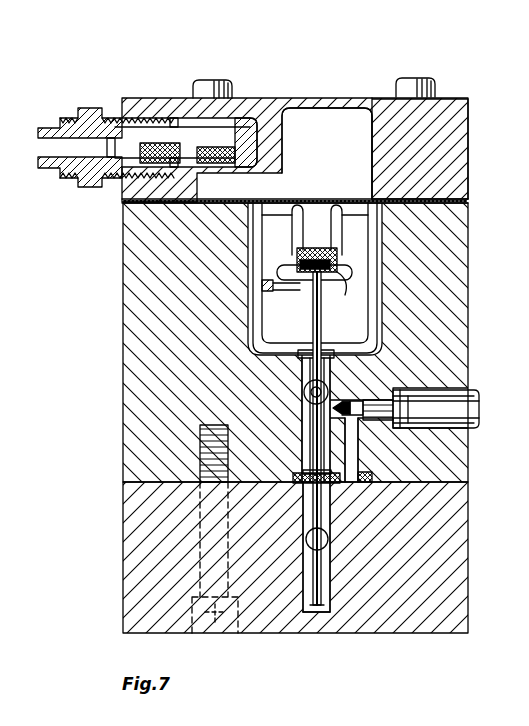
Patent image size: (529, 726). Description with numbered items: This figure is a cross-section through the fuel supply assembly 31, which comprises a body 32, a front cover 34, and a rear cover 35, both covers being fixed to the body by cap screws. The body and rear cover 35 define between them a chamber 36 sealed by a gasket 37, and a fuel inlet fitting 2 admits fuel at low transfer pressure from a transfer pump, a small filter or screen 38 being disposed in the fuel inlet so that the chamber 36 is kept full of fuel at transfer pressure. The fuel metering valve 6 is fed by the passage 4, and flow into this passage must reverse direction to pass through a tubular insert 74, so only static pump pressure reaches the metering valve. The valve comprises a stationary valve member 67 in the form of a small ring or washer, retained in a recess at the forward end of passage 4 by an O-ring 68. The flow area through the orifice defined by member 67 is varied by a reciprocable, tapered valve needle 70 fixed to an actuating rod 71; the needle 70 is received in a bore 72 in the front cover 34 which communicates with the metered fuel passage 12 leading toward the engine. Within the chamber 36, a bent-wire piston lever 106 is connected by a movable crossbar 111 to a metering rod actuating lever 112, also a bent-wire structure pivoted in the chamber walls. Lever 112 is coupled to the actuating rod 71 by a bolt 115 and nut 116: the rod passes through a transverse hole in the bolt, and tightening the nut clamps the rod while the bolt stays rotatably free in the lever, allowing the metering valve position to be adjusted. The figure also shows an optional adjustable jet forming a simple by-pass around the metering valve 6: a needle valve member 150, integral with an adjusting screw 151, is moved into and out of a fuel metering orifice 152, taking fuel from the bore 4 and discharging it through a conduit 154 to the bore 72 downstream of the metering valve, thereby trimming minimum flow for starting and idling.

The fuel inlet fitting 2 is at (85, 110).
The fuel supply assembly 31 is at (166, 92).
The filter or screen 38 is at (238, 142).
The chamber 36 is at (323, 127).
The rear cover 35 is at (386, 106).
The gasket 37 is at (470, 200).
The body 32 is at (125, 328).
The front cover 34 is at (133, 567).
The nut 116 is at (300, 250).
The metering rod actuating lever 112 is at (330, 214).
The bolt 115 is at (336, 262).
The movable crossbar 111 is at (335, 282).
The piston lever 106 is at (310, 288).
The actuating rod 71 is at (330, 320).
The passage 4 is at (306, 360).
The tubular insert 74 is at (304, 392).
The fuel metering orifice 152 is at (340, 404).
The needle valve member 150 is at (346, 408).
The adjusting screw 151 is at (468, 400).
The conduit 154 is at (352, 458).
The stationary valve member 67 is at (302, 476).
The O-ring 68 is at (295, 477).
The fuel metering valve 6 is at (297, 495).
The metered fuel passage 12 is at (328, 542).
The valve needle 70 is at (312, 612).
The bore 72 is at (320, 612).